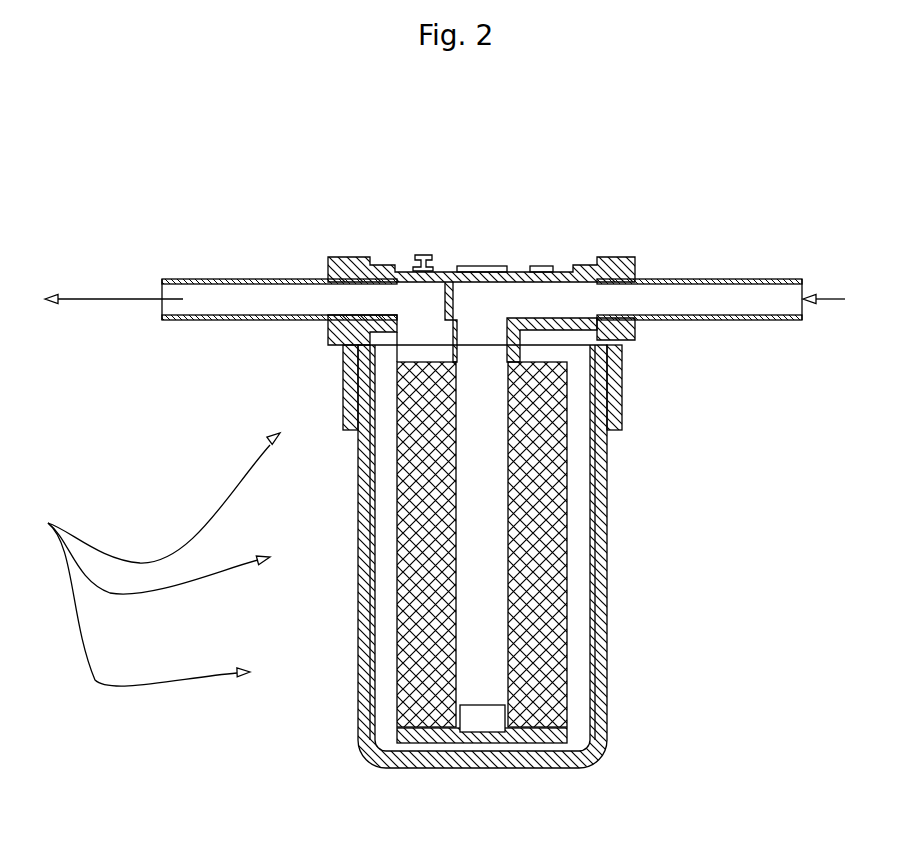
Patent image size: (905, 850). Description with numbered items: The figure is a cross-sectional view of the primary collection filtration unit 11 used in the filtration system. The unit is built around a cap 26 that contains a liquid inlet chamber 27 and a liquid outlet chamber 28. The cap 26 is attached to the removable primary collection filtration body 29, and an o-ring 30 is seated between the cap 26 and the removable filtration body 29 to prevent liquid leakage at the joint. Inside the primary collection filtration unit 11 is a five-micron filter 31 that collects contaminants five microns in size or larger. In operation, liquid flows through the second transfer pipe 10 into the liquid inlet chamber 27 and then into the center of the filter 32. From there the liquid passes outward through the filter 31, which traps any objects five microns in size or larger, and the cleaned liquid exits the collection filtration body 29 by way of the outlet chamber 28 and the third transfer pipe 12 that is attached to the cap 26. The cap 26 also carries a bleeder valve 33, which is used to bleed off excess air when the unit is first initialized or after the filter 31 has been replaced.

The second transfer pipe 10 is at (718, 270).
The primary collection filtration unit 11 is at (151, 559).
The third transfer pipe 12 is at (232, 268).
The cap 26 is at (448, 268).
The liquid inlet chamber 27 is at (537, 300).
The liquid outlet chamber 28 is at (418, 320).
The removable primary collection filtration body 29 is at (605, 590).
The o-ring 30 is at (600, 378).
The filter 31 is at (605, 466).
The center of the filter 32 is at (492, 638).
The bleeder valve 33 is at (423, 253).